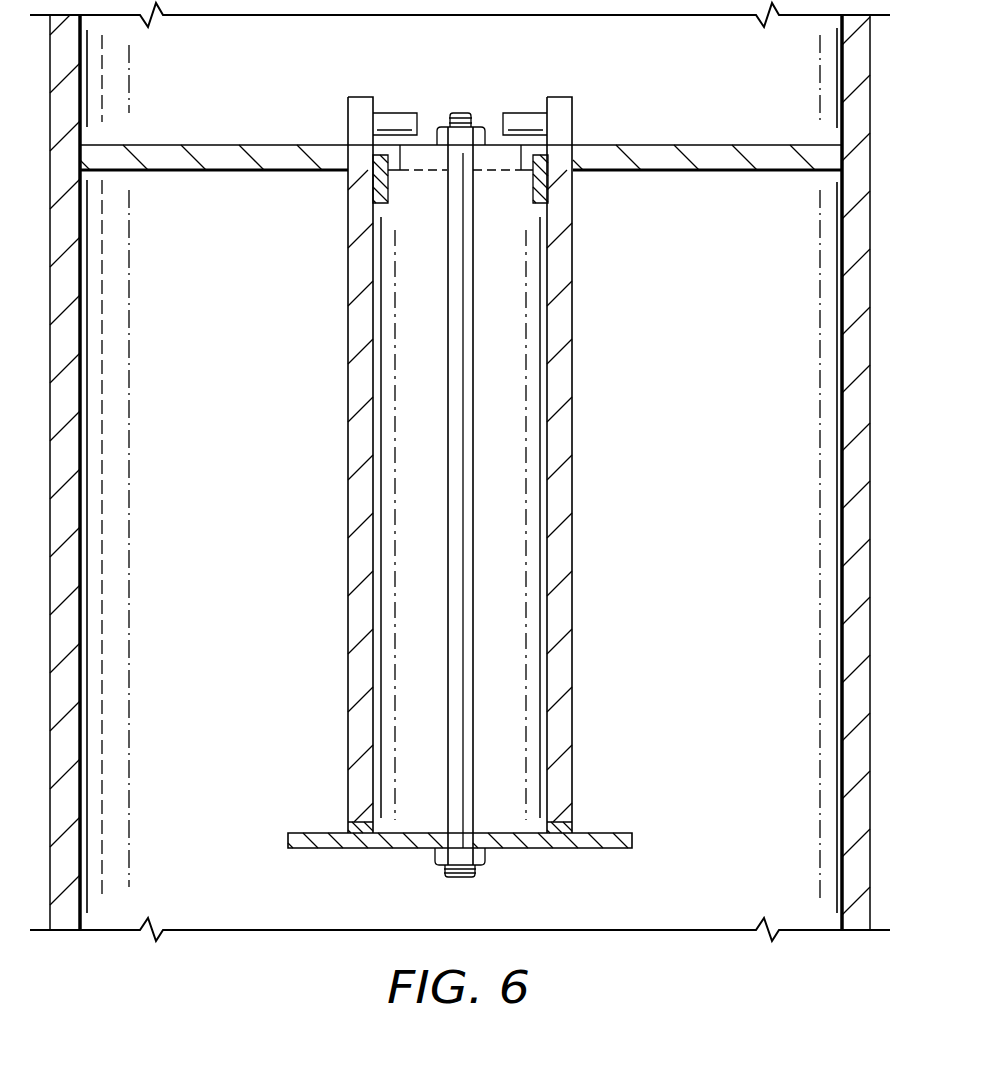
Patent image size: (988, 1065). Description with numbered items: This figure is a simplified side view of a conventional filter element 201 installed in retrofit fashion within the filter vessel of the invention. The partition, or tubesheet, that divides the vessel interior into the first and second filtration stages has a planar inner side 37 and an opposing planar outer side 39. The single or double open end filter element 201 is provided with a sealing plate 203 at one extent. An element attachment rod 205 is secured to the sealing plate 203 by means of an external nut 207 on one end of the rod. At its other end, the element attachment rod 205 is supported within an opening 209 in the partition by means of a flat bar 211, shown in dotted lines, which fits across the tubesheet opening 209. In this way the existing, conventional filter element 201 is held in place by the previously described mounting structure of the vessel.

The planar inner side 37 is at (743, 172).
The planar outer side 39 is at (673, 143).
The filter element 201 is at (597, 472).
The sealing plate 203 is at (390, 850).
The element attachment rod 205 is at (447, 242).
The external nut 207 is at (488, 860).
The opening 209 is at (408, 158).
The flat bar 211 is at (500, 155).